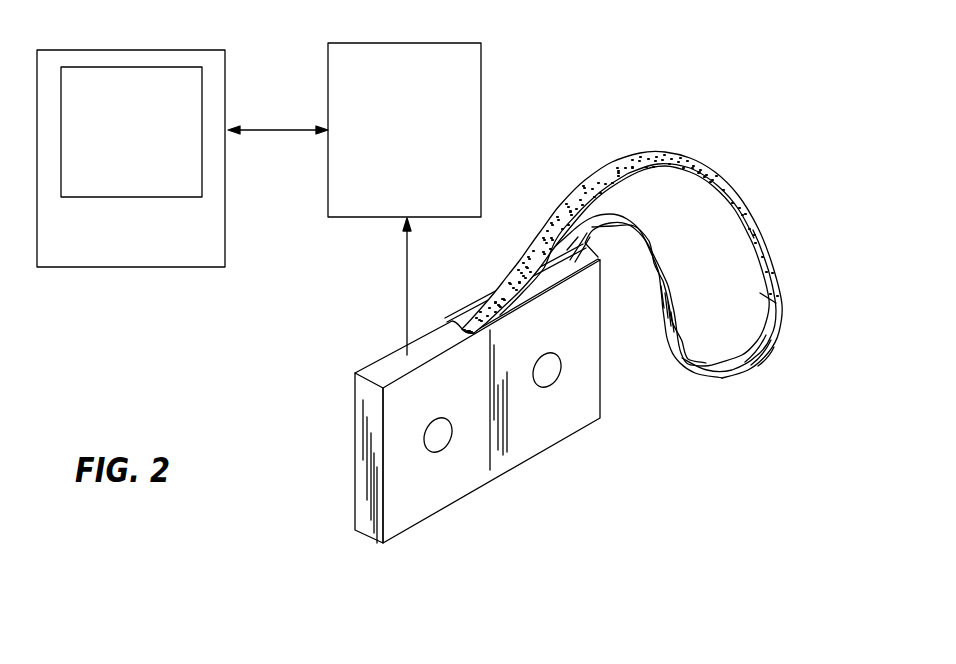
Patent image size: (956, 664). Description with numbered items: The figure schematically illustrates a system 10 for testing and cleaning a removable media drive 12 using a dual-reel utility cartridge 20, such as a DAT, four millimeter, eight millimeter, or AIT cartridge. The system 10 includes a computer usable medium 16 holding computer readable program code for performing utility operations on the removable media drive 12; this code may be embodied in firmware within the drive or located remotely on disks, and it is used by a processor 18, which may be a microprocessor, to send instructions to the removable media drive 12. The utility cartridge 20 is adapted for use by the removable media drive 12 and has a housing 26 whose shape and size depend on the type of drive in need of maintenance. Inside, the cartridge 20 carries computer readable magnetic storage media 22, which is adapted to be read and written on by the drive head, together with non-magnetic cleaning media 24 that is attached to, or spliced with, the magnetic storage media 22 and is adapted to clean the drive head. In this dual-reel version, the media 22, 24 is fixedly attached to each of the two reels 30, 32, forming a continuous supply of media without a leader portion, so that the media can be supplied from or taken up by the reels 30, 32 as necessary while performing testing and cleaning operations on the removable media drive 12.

The system 10 is at (612, 42).
The removable media drive 12 is at (481, 83).
The computer usable medium 16 is at (131, 67).
The processor 18 is at (134, 280).
The utility cartridge 20 is at (340, 407).
The computer readable magnetic storage media 22 is at (726, 390).
The non-magnetic cleaning media 24 is at (657, 140).
The housing 26 is at (548, 448).
The reel 30 is at (440, 453).
The reel 32 is at (549, 388).